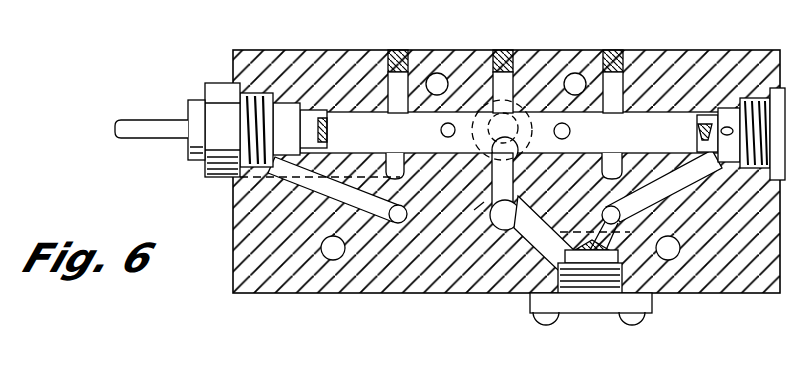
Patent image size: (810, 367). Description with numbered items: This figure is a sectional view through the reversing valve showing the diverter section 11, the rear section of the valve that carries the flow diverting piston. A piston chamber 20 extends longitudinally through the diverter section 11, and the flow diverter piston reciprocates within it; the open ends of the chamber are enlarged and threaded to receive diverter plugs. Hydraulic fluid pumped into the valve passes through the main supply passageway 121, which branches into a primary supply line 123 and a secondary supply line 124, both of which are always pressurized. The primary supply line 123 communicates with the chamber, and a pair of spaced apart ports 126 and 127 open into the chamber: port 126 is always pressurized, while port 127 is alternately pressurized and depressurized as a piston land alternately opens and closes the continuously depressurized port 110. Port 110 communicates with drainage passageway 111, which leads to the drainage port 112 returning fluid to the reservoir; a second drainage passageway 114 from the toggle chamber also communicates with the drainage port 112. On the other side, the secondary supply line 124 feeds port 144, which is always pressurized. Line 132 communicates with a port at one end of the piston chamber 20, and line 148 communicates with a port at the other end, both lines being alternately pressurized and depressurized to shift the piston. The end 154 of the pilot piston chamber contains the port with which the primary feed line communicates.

The rear section 11 is at (752, 51).
The piston chamber 20 is at (678, 118).
The port 110 is at (518, 128).
The main supply passageway 121 is at (483, 110).
The primary supply line 123 is at (415, 143).
The port 127 is at (441, 130).
The end 154 is at (571, 131).
The port 144 is at (612, 160).
The port 126 is at (403, 180).
The secondary supply line 124 is at (534, 188).
The drainage passageway 111 is at (484, 202).
The drainage passageway 114 is at (500, 230).
The drainage port 112 is at (530, 248).
The line 132 is at (397, 224).
The line 148 is at (640, 216).